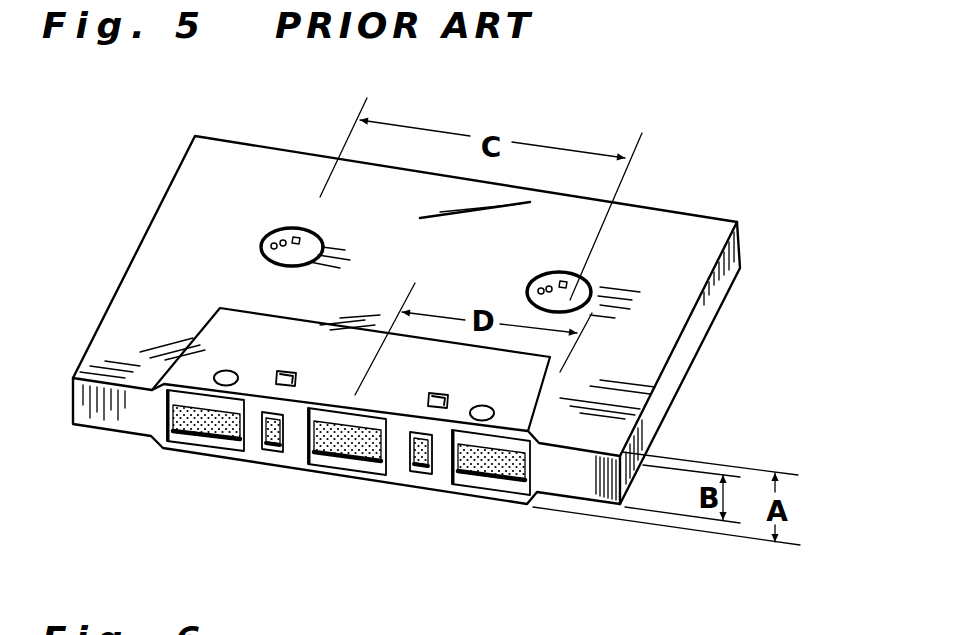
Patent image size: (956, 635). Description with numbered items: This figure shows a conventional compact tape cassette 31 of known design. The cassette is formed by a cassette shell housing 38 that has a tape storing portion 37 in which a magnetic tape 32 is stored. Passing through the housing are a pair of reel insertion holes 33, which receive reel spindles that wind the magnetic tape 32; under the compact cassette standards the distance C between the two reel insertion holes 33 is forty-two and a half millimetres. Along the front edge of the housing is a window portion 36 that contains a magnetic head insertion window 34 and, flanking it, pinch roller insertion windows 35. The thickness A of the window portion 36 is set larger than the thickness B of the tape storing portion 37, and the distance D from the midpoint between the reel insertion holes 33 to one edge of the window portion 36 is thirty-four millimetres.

The compact tape cassette 31 is at (415, 190).
The magnetic tape 32 is at (377, 447).
The reel insertion holes 33 is at (291, 258).
The magnetic head insertion window 34 is at (337, 455).
The pinch roller insertion windows 35 is at (200, 437).
The window portion 36 is at (338, 365).
The tape storing portion 37 is at (620, 353).
The cassette shell housing 38 is at (655, 413).